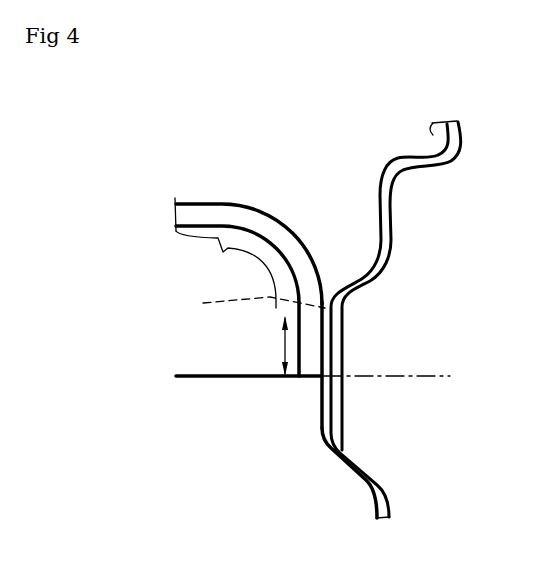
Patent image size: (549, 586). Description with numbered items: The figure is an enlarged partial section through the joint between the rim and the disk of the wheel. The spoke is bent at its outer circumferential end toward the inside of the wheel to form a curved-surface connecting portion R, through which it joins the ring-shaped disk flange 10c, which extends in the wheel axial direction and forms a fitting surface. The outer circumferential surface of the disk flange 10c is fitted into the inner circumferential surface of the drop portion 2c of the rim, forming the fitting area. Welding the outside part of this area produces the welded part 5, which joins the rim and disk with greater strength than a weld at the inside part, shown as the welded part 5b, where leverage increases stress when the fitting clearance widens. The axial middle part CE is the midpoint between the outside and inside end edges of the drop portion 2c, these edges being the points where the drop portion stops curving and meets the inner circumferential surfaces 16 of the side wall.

The welded part 5 is at (349, 262).
The welded part 5b is at (312, 400).
The inner circumferential surface of the side wall 16 is at (374, 255).
The drop portion 2c is at (367, 370).
The axial middle part of the drop portion CE is at (332, 377).
The disk flange 10c is at (254, 346).
The curved-surface connecting portion R is at (220, 269).